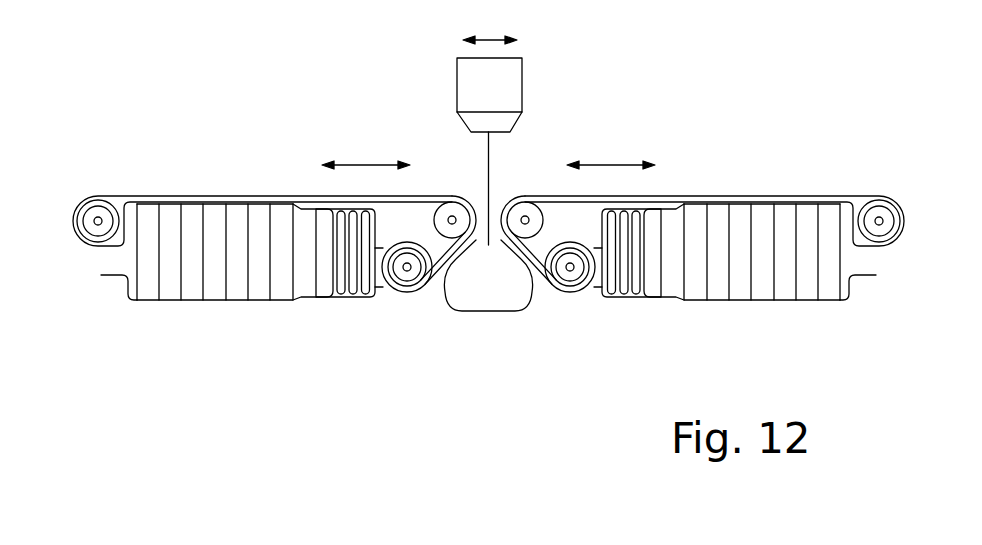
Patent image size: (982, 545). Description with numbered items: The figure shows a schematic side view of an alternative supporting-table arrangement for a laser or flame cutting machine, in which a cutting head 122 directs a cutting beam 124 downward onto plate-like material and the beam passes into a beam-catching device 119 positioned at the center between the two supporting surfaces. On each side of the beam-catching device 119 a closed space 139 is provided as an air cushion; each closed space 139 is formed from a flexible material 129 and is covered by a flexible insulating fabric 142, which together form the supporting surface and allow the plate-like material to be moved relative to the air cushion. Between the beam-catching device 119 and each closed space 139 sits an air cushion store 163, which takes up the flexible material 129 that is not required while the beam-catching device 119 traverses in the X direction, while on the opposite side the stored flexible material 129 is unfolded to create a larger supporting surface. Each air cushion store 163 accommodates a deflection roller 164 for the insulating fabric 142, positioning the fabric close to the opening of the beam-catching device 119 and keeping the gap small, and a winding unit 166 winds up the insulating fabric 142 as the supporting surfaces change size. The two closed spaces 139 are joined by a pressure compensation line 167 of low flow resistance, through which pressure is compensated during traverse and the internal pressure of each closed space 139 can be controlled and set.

The beam-catching device 119 is at (489, 288).
The cutting head 122 is at (500, 88).
The cutting beam 124 is at (494, 208).
The flexible material 129 is at (170, 203).
The closed space 139 is at (260, 250).
The flexible insulating fabric 142 is at (147, 198).
The air cushion store 163 is at (357, 311).
The deflection roller 164 is at (451, 215).
The winding unit 166 is at (100, 218).
The pressure compensation line 167 is at (113, 263).